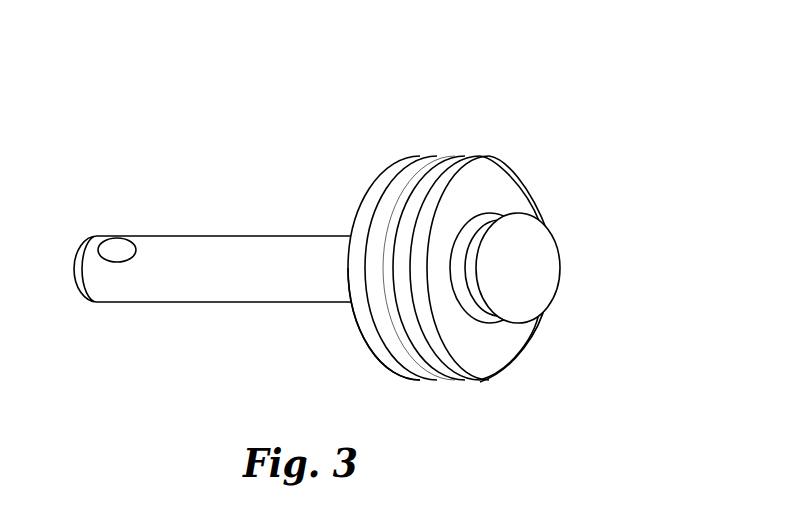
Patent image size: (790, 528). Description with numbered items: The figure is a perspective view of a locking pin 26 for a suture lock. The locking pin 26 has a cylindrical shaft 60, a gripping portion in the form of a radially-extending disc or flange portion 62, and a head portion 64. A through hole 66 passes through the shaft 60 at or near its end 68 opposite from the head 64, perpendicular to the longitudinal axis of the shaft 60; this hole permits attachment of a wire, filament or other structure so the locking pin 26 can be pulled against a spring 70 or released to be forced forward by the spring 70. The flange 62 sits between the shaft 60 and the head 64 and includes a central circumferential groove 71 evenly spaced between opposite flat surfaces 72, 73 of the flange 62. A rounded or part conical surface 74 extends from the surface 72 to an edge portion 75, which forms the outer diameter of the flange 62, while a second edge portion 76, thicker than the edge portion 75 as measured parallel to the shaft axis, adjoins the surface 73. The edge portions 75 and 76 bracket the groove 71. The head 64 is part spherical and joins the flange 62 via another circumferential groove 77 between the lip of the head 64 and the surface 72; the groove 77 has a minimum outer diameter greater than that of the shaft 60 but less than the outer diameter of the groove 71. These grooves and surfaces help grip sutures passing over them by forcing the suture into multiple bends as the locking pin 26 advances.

The locking pin 26 is at (549, 182).
The cylindrical shaft 60 is at (170, 250).
The disc or flange portion 62 is at (439, 147).
The head portion 64 is at (555, 253).
The through hole 66 is at (117, 250).
The end 68 is at (80, 247).
The spring 70 is at (502, 340).
The central circumferential groove 71 is at (405, 190).
The flat surface 72 is at (510, 333).
The flat surface 73 is at (362, 335).
The rounded or part conical surface 74 is at (485, 168).
The edge portion 75 is at (447, 160).
The second edge portion 76 is at (383, 182).
The circumferential groove 77 is at (493, 211).